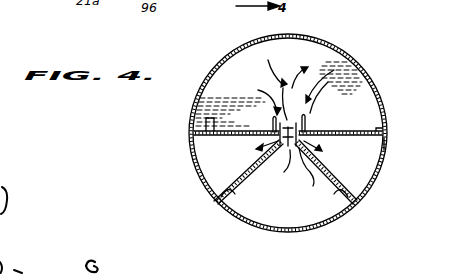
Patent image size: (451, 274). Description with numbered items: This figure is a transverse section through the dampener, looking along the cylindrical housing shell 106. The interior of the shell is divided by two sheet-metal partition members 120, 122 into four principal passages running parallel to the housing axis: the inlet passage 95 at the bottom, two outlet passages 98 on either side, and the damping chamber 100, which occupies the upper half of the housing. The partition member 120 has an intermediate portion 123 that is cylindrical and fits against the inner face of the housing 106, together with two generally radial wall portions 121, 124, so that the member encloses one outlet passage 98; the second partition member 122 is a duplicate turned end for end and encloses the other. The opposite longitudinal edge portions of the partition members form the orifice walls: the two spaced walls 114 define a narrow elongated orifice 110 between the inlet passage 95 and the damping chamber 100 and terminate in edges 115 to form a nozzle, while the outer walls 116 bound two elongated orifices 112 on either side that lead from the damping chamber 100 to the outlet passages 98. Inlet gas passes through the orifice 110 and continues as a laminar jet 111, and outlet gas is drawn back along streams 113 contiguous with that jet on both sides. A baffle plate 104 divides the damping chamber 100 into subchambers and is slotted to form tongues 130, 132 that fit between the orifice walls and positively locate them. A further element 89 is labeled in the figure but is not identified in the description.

The damping chamber 100 is at (316, 47).
The cylindrical housing shell 106 is at (362, 64).
The baffle plate 104 is at (365, 99).
The radial wall portion 121 is at (388, 128).
The second partition member 122 is at (388, 151).
The outlet passage 98 is at (365, 173).
The intermediate portion 123 is at (200, 179).
The radial wall portion 124 is at (213, 196).
The partition member 120 is at (193, 124).
The orifice 112 is at (268, 120).
The outer wall 116 is at (268, 112).
The stream 113 is at (277, 93).
The jet 111 is at (300, 90).
The edge 115 is at (300, 112).
The tongue 130 is at (306, 115).
The tongue 132 is at (308, 120).
The passage 89 is at (303, 138).
The orifice 110 is at (289, 165).
The spaced wall 114 is at (272, 152).
The inlet passage 95 is at (301, 214).